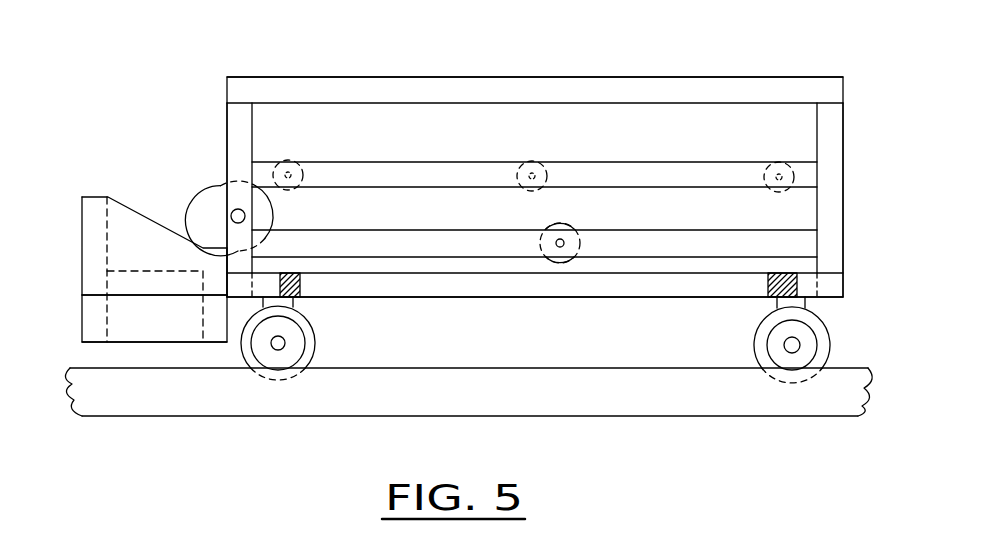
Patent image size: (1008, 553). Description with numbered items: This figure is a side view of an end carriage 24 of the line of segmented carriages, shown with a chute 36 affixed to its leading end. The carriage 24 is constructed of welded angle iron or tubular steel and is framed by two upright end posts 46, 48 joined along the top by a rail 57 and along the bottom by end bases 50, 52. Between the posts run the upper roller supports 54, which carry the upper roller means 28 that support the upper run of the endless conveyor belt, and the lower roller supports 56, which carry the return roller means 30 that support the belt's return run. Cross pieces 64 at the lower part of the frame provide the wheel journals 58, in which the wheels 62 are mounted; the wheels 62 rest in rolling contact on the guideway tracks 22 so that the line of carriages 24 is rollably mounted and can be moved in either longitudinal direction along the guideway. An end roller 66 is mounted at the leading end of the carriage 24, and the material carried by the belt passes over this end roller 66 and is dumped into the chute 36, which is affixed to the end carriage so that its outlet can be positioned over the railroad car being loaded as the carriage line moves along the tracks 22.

The guideway tracks 22 is at (350, 418).
The segmented carriage 24 is at (545, 54).
The upper roller means 28 is at (298, 190).
The return roller means 30 is at (553, 264).
The chute 36 is at (82, 210).
The end post 46 is at (227, 118).
The end post 48 is at (843, 146).
The end base 50 is at (233, 283).
The end base 52 is at (843, 280).
The upper roller supports 54 is at (390, 162).
The lower roller supports 56 is at (372, 230).
The rail 57 is at (347, 78).
The wheel journals 58 is at (298, 302).
The wheels 62 is at (316, 350).
The cross pieces 64 is at (312, 288).
The end roller 66 is at (214, 190).